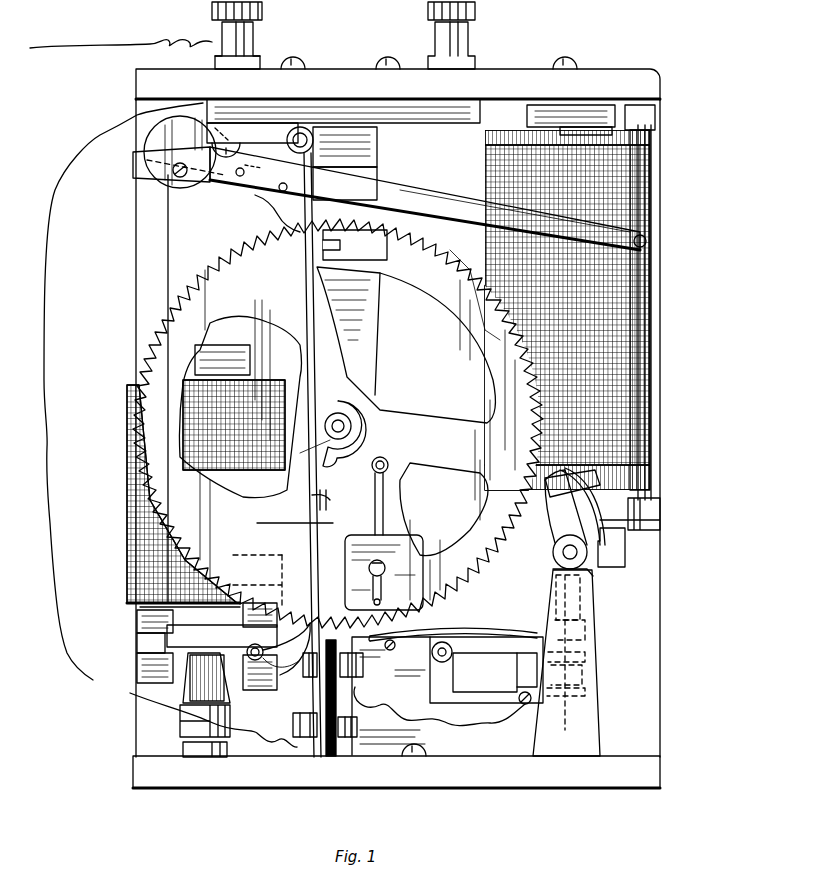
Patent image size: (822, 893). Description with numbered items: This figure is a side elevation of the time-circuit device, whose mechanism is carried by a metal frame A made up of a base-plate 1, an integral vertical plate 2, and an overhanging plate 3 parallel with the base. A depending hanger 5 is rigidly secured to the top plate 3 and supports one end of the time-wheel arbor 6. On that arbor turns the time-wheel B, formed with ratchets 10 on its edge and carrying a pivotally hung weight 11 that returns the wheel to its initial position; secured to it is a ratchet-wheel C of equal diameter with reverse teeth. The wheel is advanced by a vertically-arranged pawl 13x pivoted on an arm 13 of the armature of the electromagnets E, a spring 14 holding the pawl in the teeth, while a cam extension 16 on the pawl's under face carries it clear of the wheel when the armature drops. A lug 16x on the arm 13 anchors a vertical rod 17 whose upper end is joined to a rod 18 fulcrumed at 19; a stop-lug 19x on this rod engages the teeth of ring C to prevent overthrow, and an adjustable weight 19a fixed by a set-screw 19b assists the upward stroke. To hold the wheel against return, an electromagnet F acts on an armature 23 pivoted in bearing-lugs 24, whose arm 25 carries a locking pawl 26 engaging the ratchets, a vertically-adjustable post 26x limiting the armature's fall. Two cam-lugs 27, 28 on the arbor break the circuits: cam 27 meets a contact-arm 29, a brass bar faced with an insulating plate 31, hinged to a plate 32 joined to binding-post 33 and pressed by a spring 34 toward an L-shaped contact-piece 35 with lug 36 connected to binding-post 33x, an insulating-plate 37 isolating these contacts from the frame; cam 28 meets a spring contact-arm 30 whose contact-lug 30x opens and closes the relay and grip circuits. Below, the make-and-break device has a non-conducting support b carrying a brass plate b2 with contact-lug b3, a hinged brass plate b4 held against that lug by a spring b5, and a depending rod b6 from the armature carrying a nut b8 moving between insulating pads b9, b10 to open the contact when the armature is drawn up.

The base-plate 1 is at (590, 770).
The vertical plate 2 is at (135, 280).
The overhanging plate 3 is at (396, 422).
The depending arm or hanger 5 is at (376, 332).
The time-wheel shaft or arbor 6 is at (343, 421).
The ratchets 10 is at (140, 378).
The weight 11 is at (384, 572).
The extension, arm, or lug of the armature 13 is at (590, 563).
The vertically-arranged pawl 13x is at (556, 550).
The spring 14 is at (598, 540).
The cam extension 16 is at (555, 513).
The lug 16x is at (629, 532).
The vertically-disposed rod 17 is at (655, 350).
The rod 18 is at (515, 211).
The fulcrum 19 is at (400, 207).
The weight 19a is at (184, 152).
The set-screw 19b is at (176, 174).
The stop-lug 19x is at (260, 203).
The armature 23 is at (165, 610).
The ears or bearing-lugs 24 is at (278, 624).
The arm 25 is at (206, 678).
The pawl 26 is at (292, 670).
The vertically-adjustable post 26x is at (182, 740).
The cam-lug 27 is at (350, 458).
The cam-lug 28 is at (328, 458).
The contact-arm 29 is at (313, 197).
The contact-arm 30 is at (318, 560).
The contact-lug 30x is at (332, 497).
The insulating plate 31 is at (306, 398).
The plate 32 is at (260, 140).
The binding-post 33 is at (256, 42).
The binding-post 33x is at (443, 38).
The spring 34 is at (295, 262).
The contact-piece 35 is at (378, 163).
The lug 36 is at (355, 245).
The insulating-plate 37 is at (431, 117).
The frame A is at (96, 727).
The time-wheel B is at (240, 393).
The ratchet-wheel C is at (470, 268).
The electromagnets E is at (640, 196).
The electromagnet F is at (126, 515).
The non-conducting support b is at (425, 696).
The brass plate b2 is at (486, 670).
The contact-lug b3 is at (522, 668).
The brass plate b4 is at (462, 648).
The spring b5 is at (453, 619).
The depending rod b6 is at (570, 632).
The nut b8 is at (582, 675).
The insulating pad or block b9 is at (585, 657).
The insulating pad or block b10 is at (585, 692).